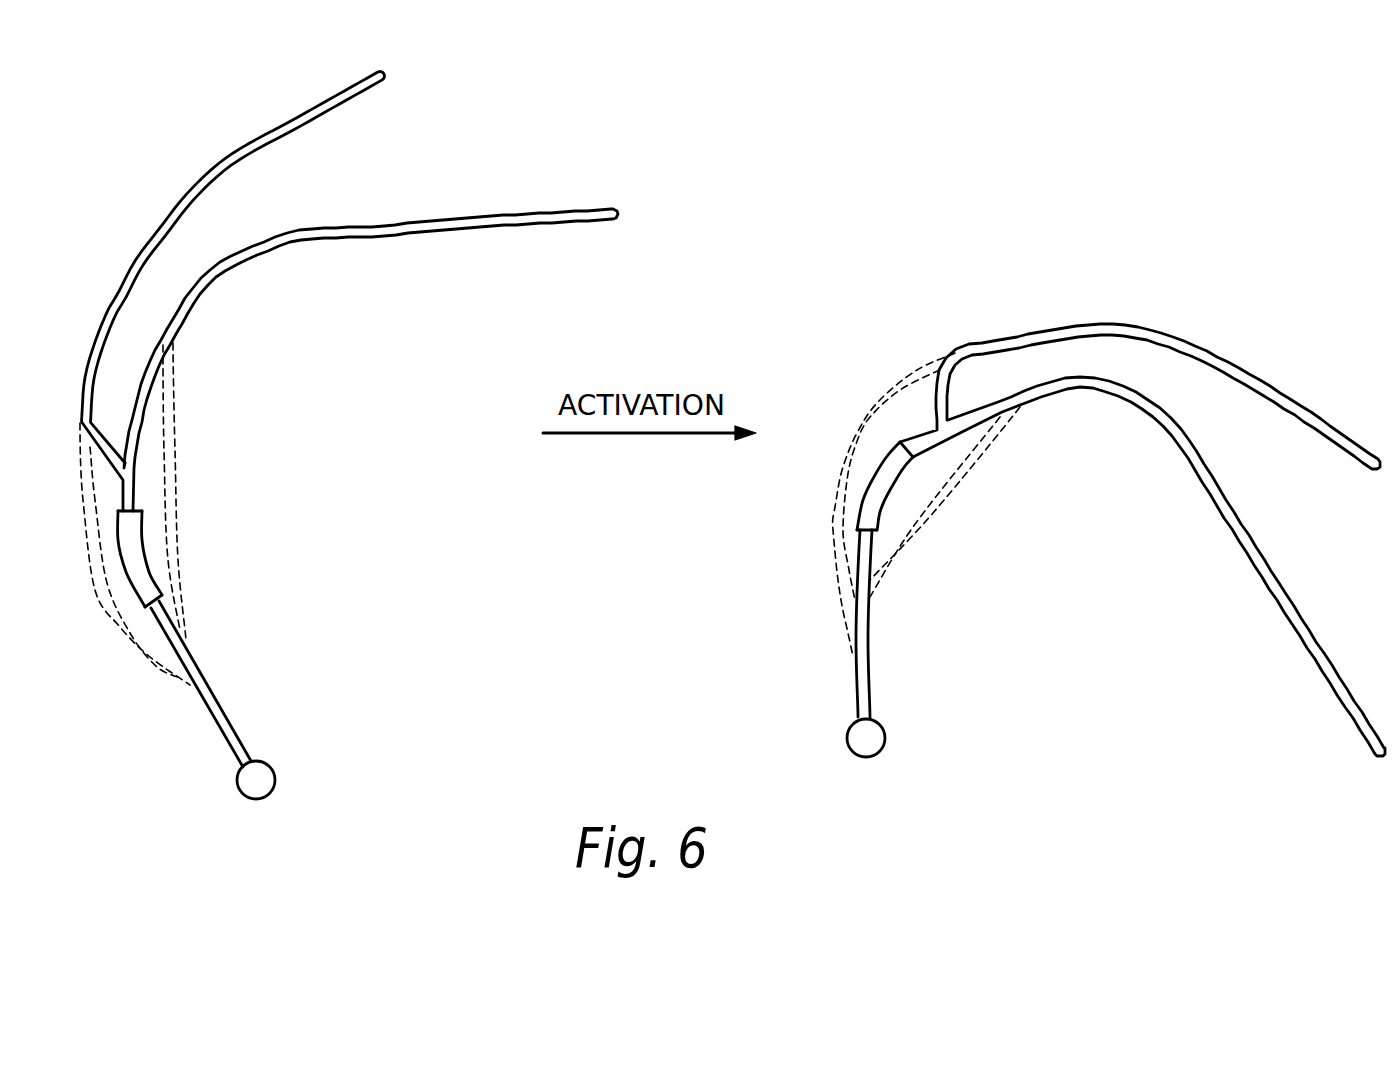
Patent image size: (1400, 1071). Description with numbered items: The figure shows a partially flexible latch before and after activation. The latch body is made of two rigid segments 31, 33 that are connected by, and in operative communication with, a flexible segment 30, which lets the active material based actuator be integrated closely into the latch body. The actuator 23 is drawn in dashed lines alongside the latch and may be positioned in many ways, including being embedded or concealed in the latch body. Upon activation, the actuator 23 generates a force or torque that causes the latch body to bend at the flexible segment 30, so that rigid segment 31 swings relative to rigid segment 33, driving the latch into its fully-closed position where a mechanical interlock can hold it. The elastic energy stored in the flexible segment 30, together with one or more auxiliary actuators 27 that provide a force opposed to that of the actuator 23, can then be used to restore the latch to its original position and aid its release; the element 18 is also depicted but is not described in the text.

The first tube 18 is at (218, 156).
The rigid segment 33 is at (443, 222).
The flexible segment 30 is at (143, 560).
The rigid segment 31 is at (208, 713).
The actuator 23 is at (175, 460).
The auxiliary actuator 27 is at (96, 596).